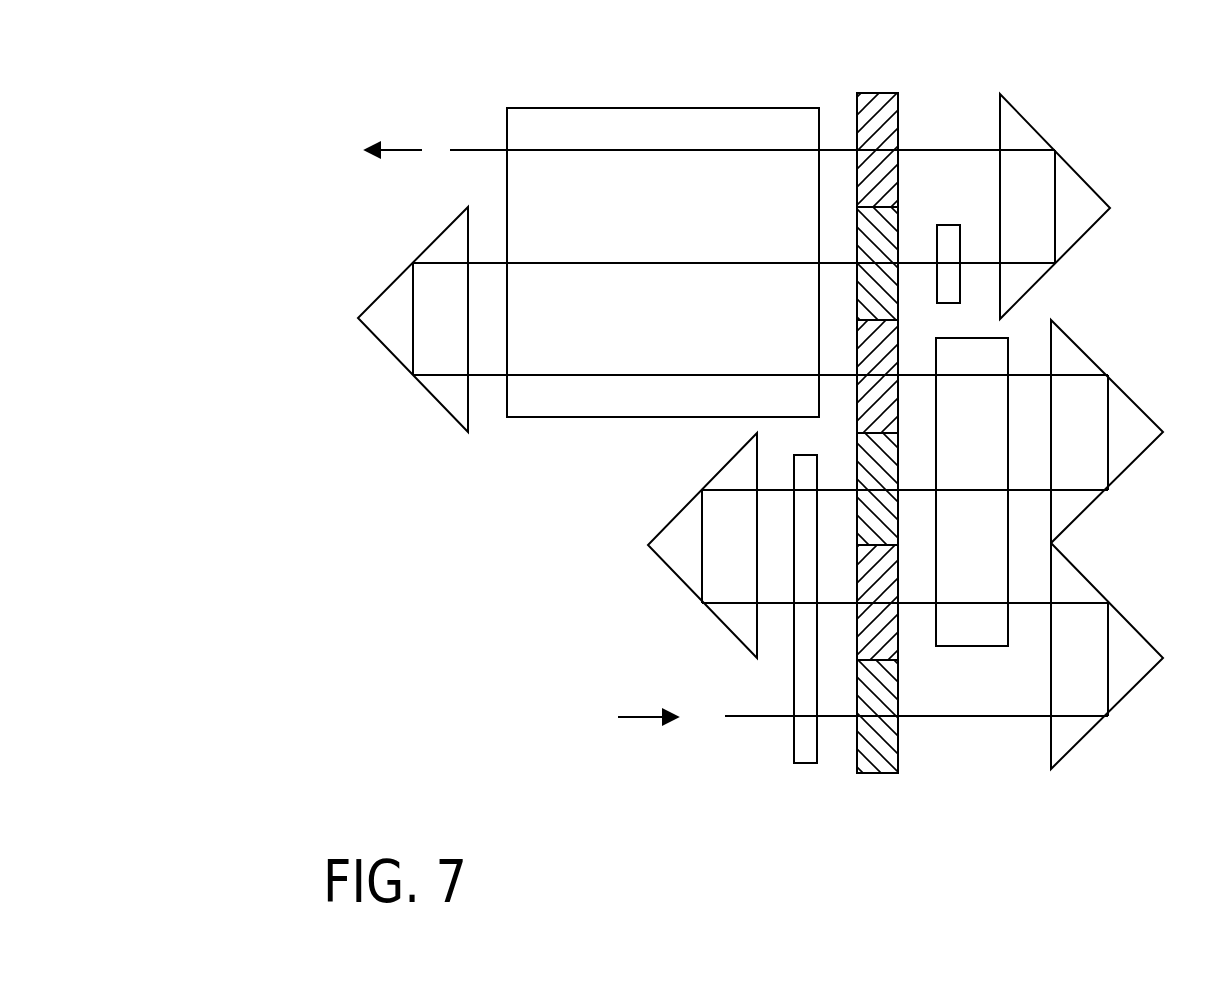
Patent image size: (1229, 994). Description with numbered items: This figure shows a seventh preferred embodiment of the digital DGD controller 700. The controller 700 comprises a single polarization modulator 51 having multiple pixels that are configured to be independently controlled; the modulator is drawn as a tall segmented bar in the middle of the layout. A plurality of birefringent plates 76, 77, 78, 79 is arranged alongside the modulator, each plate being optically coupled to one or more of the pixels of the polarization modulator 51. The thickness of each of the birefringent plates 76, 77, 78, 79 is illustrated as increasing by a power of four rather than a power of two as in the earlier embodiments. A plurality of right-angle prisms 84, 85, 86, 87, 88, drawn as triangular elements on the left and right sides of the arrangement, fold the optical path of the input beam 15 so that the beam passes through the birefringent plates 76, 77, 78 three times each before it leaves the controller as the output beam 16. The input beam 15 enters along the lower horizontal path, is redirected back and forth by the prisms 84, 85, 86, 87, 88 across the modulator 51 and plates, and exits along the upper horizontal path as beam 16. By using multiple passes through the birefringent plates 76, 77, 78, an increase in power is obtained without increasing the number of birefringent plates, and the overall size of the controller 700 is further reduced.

The digital DGD controller 700 is at (414, 805).
The input beam 15 is at (648, 716).
The output optical signal 16 is at (392, 149).
The polarization modulator 51 is at (882, 92).
The birefringent plate 76 is at (805, 765).
The birefringent plate 77 is at (967, 648).
The birefringent plate 78 is at (535, 419).
The birefringent plate 79 is at (950, 224).
The right-angle prism 84 is at (1141, 633).
The right-angle prism 85 is at (663, 527).
The right-angle prism 86 is at (1141, 406).
The right-angle prism 87 is at (373, 300).
The right-angle prism 88 is at (1091, 185).